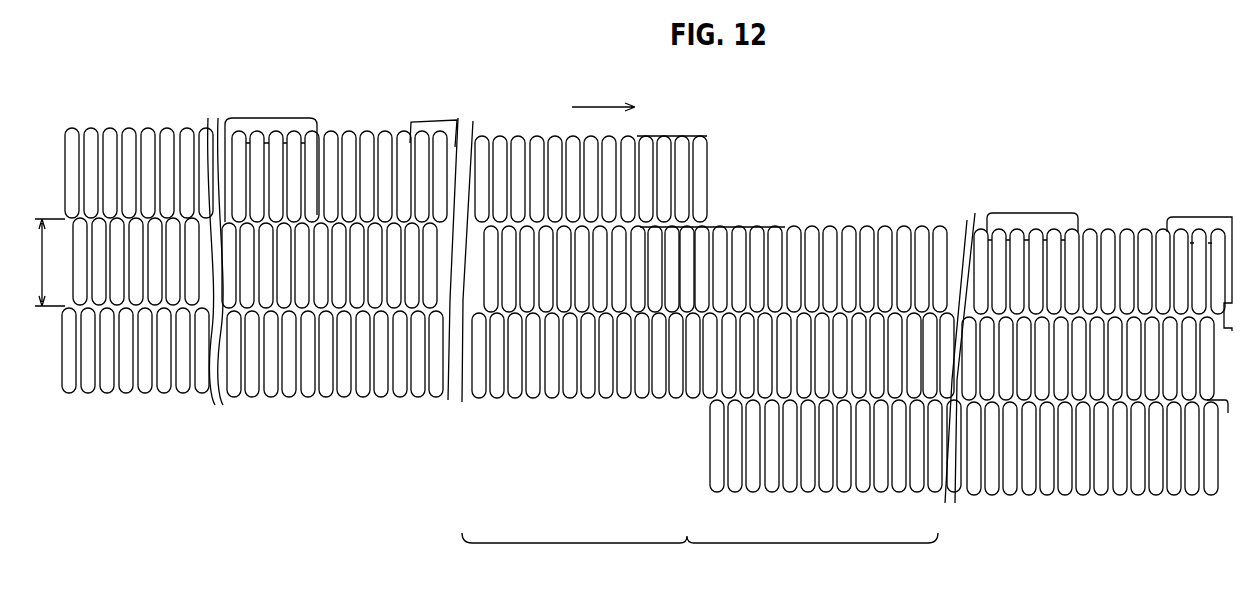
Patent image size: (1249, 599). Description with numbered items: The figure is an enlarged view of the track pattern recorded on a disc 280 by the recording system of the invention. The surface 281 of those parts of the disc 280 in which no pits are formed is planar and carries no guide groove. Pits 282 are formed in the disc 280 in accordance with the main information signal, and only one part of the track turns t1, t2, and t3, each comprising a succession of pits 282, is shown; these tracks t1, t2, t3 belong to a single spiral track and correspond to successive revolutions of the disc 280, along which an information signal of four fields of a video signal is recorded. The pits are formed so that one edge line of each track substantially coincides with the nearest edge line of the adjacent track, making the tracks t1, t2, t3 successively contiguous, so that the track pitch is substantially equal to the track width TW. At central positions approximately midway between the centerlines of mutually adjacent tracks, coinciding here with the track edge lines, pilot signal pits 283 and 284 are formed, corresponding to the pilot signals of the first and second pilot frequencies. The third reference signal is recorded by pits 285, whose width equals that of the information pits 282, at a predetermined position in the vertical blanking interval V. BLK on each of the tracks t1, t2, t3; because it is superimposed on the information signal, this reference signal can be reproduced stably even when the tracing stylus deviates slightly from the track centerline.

The disc 280 is at (955, 137).
The surface 281 is at (155, 133).
The pits 282 is at (128, 130).
The pilot signal pits 283 is at (360, 215).
The pilot signal pits 284 is at (266, 118).
The pits 285 is at (470, 135).
The track t1 is at (712, 181).
The track t2 is at (703, 264).
The track t3 is at (690, 375).